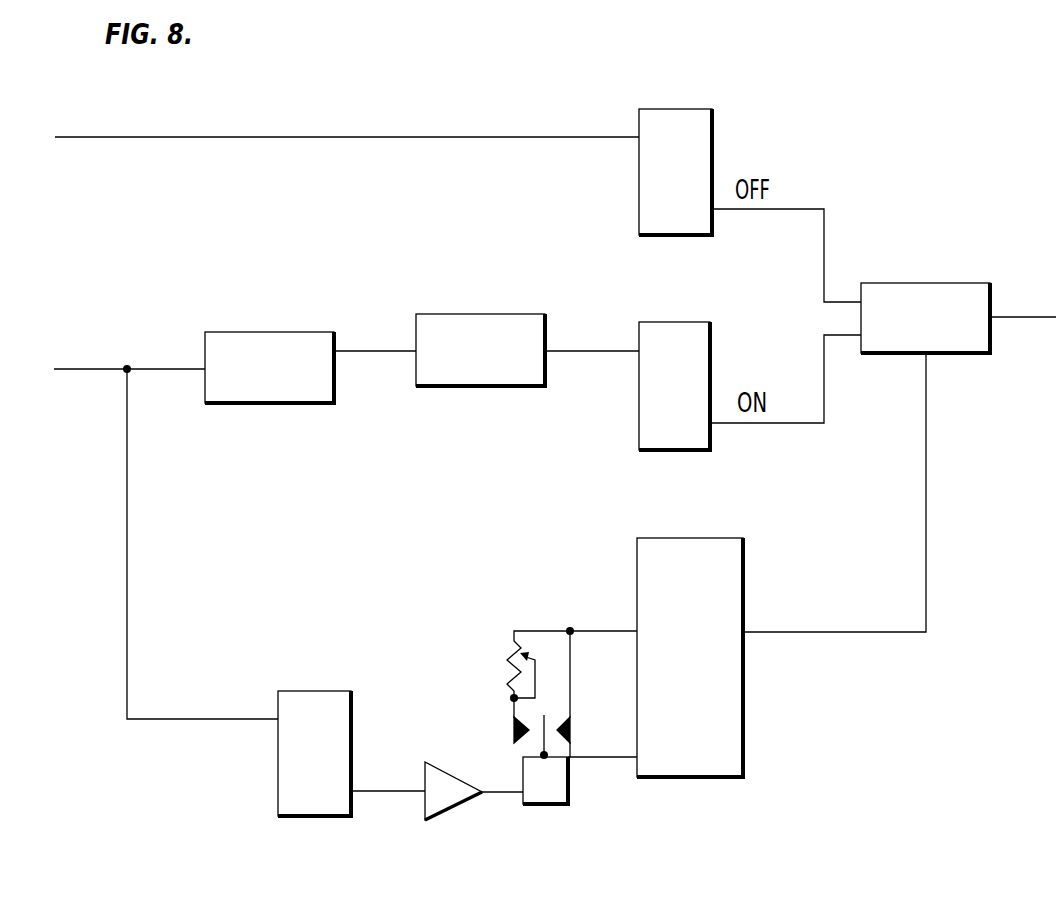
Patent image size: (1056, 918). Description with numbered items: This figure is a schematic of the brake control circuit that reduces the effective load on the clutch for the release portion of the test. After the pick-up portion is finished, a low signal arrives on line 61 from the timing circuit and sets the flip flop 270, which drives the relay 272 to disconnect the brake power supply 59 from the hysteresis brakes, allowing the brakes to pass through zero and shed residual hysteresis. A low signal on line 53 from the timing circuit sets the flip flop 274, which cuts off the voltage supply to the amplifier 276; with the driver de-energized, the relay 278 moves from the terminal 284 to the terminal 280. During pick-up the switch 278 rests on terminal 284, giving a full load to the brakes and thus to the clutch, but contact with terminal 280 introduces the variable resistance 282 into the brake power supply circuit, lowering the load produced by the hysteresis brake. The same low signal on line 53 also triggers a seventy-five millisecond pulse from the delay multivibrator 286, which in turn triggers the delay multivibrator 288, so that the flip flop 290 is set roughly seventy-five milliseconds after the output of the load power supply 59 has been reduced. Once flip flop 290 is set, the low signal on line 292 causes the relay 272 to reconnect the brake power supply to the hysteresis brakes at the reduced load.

The line 53 is at (89, 369).
The brake power supply 59 is at (697, 538).
The line 61 is at (302, 137).
The flip flop 270 is at (640, 118).
The relay 272 is at (933, 283).
The flip flop 274 is at (306, 691).
The amplifier 276 is at (466, 803).
The relay 278 is at (569, 781).
The terminal 280 is at (513, 730).
The variable resistance 282 is at (515, 655).
The terminal 284 is at (584, 727).
The delay multivibrator 286 is at (299, 332).
The delay multivibrator 288 is at (463, 314).
The flip flop 290 is at (658, 322).
The line 292 is at (824, 401).